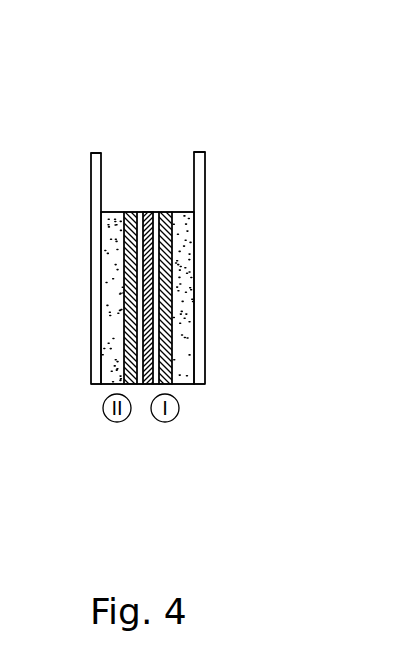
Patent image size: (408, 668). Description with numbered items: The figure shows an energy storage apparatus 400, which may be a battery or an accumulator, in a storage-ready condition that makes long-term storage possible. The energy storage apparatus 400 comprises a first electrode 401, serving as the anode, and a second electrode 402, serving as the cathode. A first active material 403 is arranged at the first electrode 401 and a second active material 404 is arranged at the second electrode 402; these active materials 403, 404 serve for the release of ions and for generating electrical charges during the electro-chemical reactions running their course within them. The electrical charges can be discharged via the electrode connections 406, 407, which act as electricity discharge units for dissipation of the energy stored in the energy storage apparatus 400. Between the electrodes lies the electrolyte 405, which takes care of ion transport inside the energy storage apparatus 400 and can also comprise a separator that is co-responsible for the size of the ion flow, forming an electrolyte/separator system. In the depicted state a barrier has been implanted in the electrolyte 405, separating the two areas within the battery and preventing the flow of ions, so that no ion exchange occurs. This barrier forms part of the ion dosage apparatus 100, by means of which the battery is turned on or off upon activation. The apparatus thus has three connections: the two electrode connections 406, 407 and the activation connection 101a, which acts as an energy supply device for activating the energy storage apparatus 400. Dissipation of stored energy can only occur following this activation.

The energy storage apparatus 400 is at (270, 57).
The first electrode 401 is at (91, 163).
The second electrode 402 is at (205, 182).
The first active material 403 is at (107, 385).
The second active material 404 is at (190, 385).
The electrolyte 405 is at (162, 212).
The electrode connection 406 is at (97, 153).
The electrode connection 407 is at (200, 150).
The ion dosage apparatus 100 is at (147, 384).
The activation connection 101a is at (152, 212).